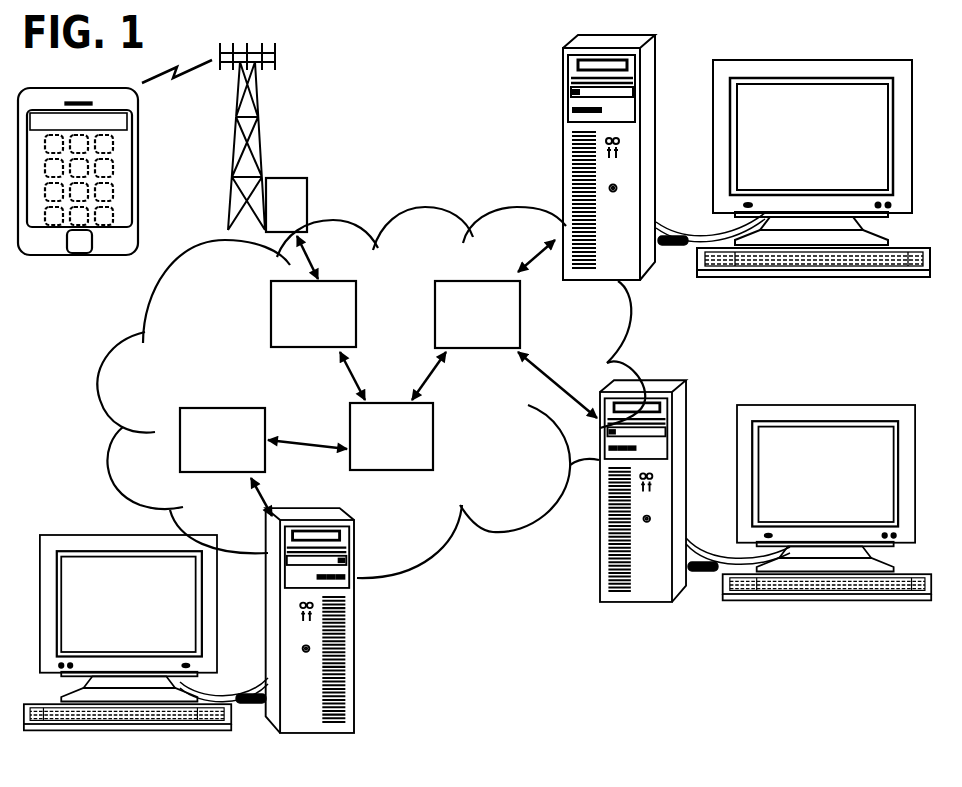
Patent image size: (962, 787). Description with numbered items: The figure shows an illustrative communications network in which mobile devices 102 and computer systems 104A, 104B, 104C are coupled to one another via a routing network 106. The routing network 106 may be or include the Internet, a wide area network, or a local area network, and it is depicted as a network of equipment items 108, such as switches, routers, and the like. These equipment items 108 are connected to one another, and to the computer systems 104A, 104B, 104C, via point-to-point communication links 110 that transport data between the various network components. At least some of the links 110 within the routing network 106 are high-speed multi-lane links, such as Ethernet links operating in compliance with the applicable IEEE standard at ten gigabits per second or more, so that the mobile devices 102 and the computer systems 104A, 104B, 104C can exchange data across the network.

The mobile device 102 is at (78, 188).
The computer system 104A is at (657, 88).
The computer system 104B is at (687, 432).
The computer system 104C is at (353, 687).
The routing network 106 is at (506, 473).
The equipment item 108 is at (308, 207).
The point-to-point communication link 110 is at (533, 268).